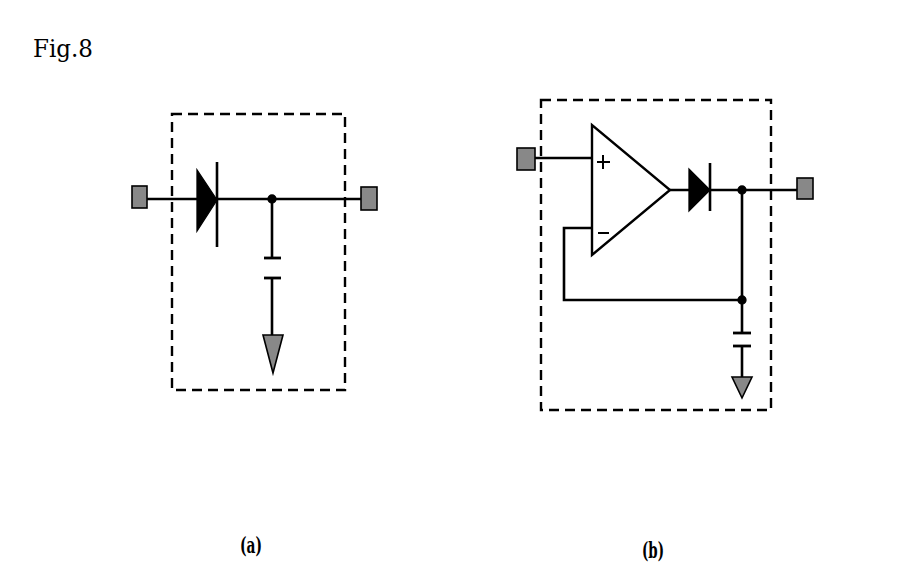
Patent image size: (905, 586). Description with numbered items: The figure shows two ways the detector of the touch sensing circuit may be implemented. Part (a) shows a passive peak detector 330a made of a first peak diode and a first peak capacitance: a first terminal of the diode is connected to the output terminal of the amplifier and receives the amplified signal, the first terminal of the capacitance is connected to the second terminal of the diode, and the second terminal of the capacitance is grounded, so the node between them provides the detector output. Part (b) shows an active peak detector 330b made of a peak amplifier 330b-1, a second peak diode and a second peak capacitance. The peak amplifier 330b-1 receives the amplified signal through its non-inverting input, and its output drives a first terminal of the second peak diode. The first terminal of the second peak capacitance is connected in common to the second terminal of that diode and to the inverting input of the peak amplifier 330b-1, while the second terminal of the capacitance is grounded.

The passive peak detector 330a is at (202, 390).
The active peak detector 330b is at (645, 295).
The peak amplifier 330b-1 is at (627, 227).